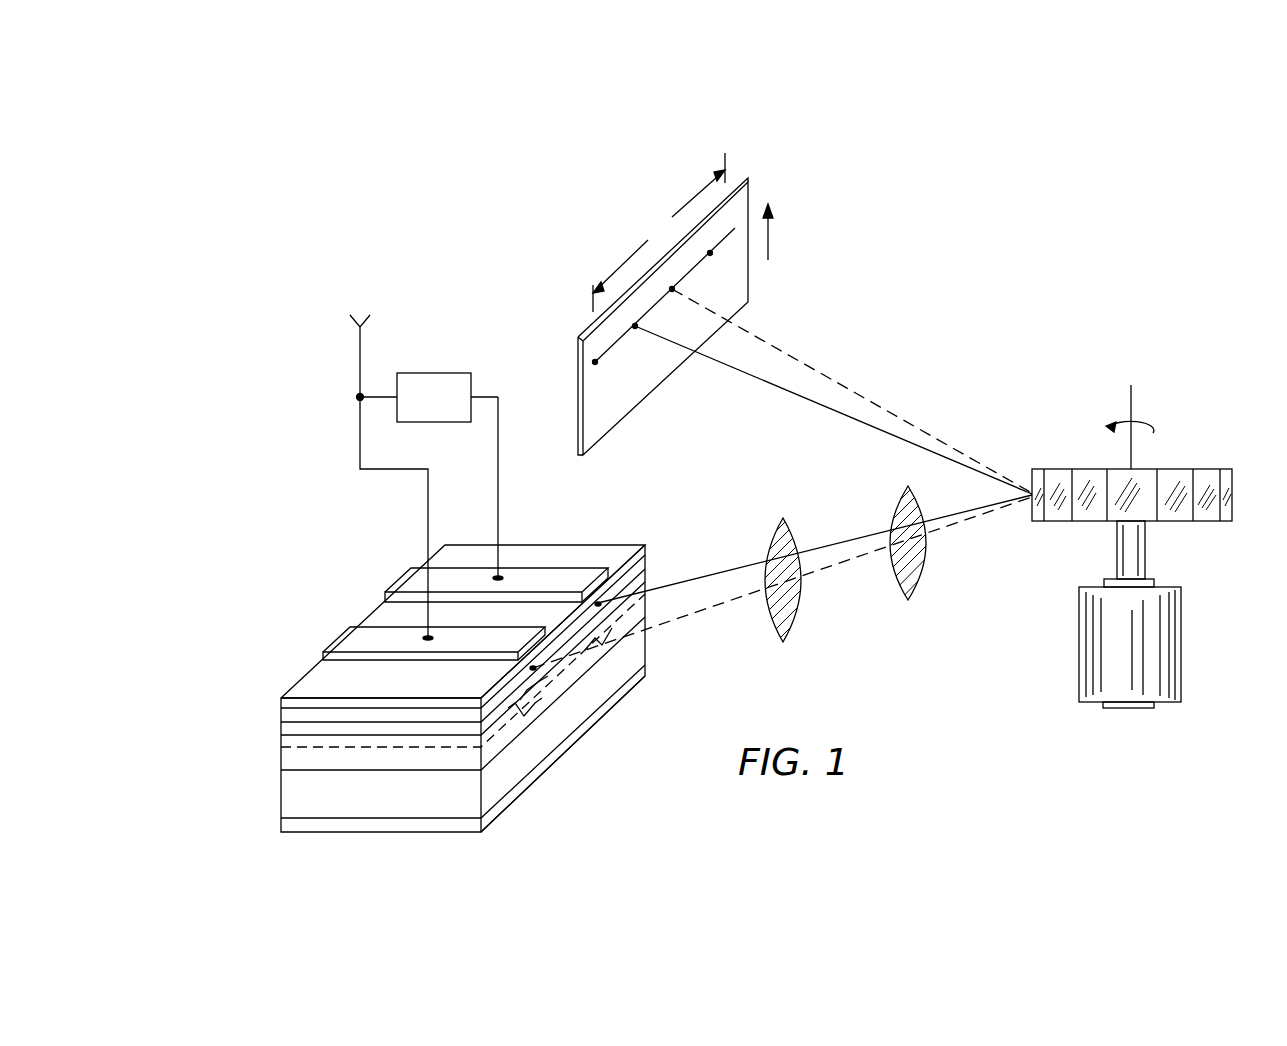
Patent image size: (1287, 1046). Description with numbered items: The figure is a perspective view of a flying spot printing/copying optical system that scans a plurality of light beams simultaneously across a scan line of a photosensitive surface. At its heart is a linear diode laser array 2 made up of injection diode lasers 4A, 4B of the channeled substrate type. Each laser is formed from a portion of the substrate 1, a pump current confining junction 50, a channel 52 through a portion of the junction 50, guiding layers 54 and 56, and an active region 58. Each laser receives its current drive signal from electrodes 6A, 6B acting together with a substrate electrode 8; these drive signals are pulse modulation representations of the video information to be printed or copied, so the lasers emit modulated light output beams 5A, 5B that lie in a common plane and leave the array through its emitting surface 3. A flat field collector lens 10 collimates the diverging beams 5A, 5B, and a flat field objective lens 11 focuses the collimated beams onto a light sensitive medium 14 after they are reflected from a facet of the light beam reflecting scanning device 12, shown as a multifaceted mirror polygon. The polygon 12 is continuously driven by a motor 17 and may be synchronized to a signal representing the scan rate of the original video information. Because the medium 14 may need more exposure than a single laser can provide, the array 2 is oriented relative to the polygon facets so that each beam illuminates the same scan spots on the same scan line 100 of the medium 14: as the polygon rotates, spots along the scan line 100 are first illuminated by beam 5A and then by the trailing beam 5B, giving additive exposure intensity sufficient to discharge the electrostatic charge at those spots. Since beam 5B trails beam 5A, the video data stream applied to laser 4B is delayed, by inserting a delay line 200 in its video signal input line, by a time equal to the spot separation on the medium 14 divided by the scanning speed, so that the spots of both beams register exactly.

The substrate 1 is at (297, 795).
The linear diode laser array 2 is at (357, 599).
The emitting surface 3 is at (583, 707).
The injection diode laser 4A is at (534, 702).
The injection diode laser 4B is at (592, 645).
The light output beam 5A is at (717, 605).
The light output beam 5B is at (715, 575).
The electrode 6A is at (340, 645).
The electrode 6B is at (407, 582).
The substrate electrode 8 is at (527, 782).
The flat field collector lens 10 is at (792, 522).
The flat field objective lens 11 is at (898, 504).
The light beam reflecting scanning device 12 is at (1180, 480).
The light sensitive medium 14 is at (738, 292).
The motor 17 is at (1093, 648).
The pump current confining junction 50 is at (378, 748).
The channel 52 is at (540, 700).
The guiding layer 54 is at (297, 757).
The guiding layer 56 is at (283, 700).
The active region 58 is at (283, 719).
The scan line 100 is at (735, 228).
The delay line 200 is at (444, 373).